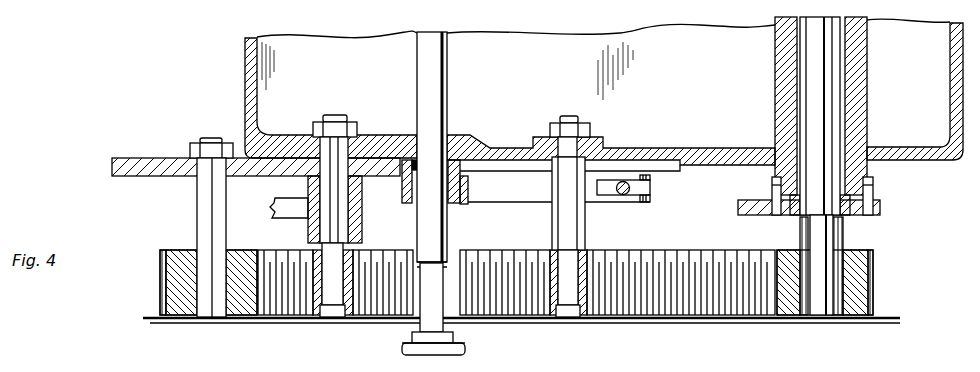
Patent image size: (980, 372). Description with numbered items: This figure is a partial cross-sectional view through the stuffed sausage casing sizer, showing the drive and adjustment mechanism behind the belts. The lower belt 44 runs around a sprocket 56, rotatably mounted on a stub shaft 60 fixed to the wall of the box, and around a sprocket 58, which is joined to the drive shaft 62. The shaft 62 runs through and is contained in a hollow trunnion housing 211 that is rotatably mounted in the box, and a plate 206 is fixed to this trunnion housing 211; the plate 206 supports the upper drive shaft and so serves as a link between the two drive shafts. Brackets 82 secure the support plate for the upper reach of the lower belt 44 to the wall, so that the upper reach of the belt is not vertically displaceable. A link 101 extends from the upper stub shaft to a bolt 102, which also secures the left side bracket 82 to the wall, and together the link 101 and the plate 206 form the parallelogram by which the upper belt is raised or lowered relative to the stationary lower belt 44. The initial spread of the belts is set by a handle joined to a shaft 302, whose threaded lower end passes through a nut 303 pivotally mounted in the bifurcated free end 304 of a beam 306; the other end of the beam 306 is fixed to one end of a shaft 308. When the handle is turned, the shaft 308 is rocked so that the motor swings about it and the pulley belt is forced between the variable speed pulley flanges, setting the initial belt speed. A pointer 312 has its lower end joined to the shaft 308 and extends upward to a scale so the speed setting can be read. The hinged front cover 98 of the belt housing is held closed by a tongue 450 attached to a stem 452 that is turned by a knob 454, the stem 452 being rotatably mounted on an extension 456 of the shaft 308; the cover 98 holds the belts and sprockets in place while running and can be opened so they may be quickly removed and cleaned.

The lower belt 44 is at (676, 255).
The sprocket 56 is at (160, 283).
The sprocket 58 is at (868, 282).
The stub shaft 60 is at (210, 307).
The drive shaft 62 is at (823, 90).
The brackets 82 is at (562, 318).
The hinged front cover 98 is at (600, 320).
The link 101 is at (282, 200).
The bolt 102 is at (335, 115).
The plate 206 is at (760, 215).
The hollow trunnion housing 211 is at (858, 52).
The shaft 302 is at (623, 183).
The nut 303 is at (650, 187).
The bifurcated free end 304 is at (645, 202).
The beam 306 is at (512, 192).
The shaft 308 is at (447, 92).
The pointer 312 is at (465, 172).
The tongue 450 is at (412, 333).
The stem 452 is at (455, 335).
The knob 454 is at (458, 353).
The extension 456 is at (447, 264).